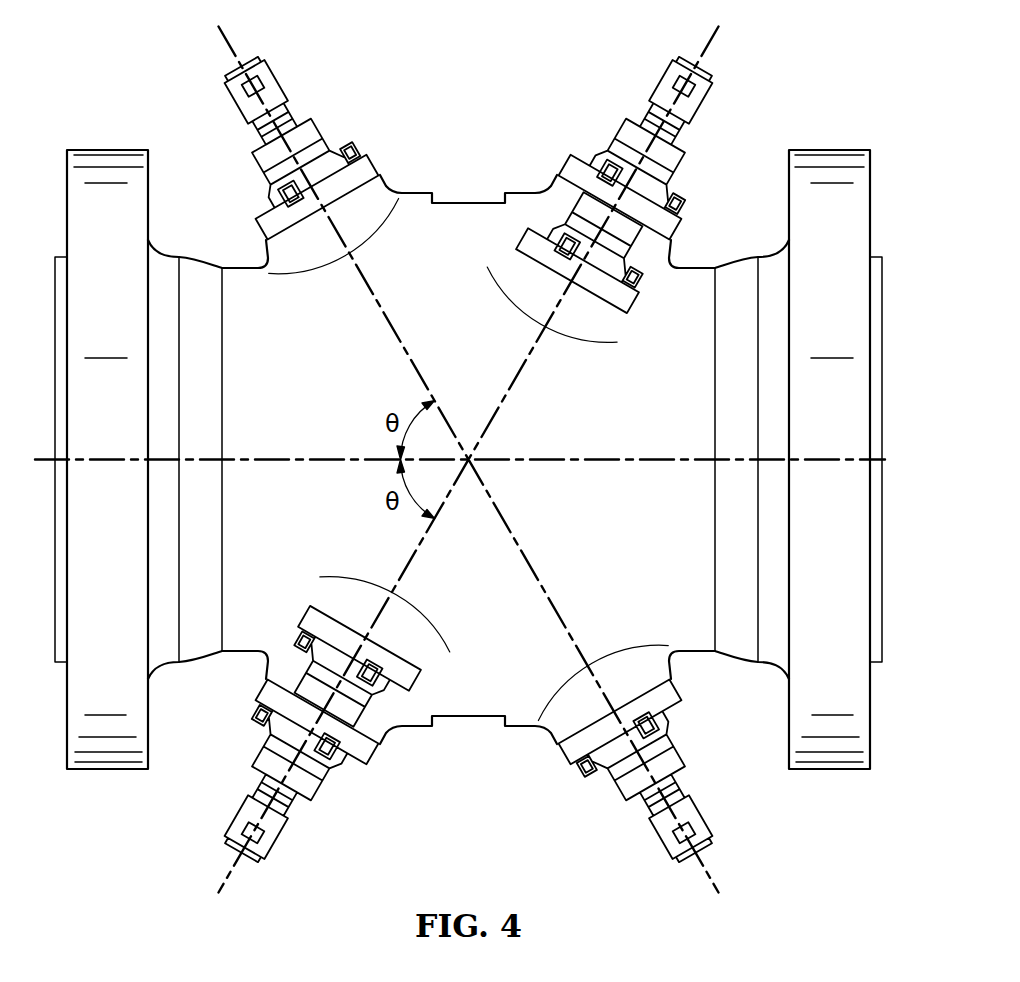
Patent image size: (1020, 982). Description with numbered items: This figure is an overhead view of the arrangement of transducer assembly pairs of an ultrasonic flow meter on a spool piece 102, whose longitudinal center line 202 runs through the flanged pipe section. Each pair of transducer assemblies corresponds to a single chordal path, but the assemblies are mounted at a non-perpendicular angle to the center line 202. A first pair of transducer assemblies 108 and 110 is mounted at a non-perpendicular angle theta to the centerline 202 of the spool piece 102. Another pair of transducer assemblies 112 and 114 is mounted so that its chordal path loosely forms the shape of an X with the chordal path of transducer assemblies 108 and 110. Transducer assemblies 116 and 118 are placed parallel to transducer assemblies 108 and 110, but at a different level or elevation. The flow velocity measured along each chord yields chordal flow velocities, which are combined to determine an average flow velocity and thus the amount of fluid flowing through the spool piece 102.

The spool piece 102 is at (471, 196).
The transducer assembly 108 is at (303, 619).
The transducer assembly 110 is at (641, 306).
The transducer assembly 112 is at (612, 788).
The transducer assembly 114 is at (324, 130).
The transducer assembly 116 is at (286, 838).
The transducer assembly 118 is at (656, 86).
The center line 202 is at (604, 462).